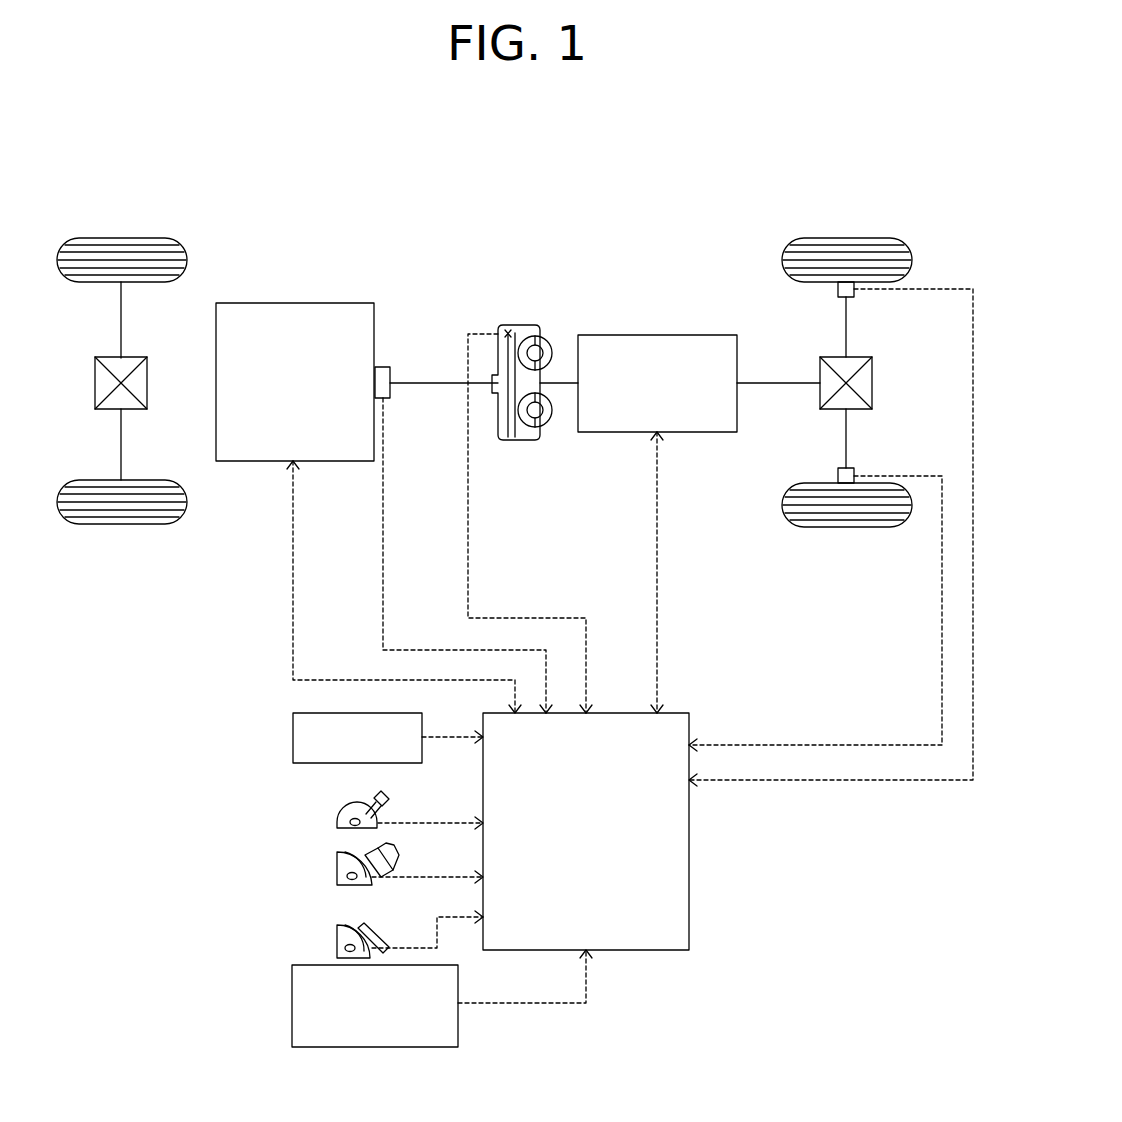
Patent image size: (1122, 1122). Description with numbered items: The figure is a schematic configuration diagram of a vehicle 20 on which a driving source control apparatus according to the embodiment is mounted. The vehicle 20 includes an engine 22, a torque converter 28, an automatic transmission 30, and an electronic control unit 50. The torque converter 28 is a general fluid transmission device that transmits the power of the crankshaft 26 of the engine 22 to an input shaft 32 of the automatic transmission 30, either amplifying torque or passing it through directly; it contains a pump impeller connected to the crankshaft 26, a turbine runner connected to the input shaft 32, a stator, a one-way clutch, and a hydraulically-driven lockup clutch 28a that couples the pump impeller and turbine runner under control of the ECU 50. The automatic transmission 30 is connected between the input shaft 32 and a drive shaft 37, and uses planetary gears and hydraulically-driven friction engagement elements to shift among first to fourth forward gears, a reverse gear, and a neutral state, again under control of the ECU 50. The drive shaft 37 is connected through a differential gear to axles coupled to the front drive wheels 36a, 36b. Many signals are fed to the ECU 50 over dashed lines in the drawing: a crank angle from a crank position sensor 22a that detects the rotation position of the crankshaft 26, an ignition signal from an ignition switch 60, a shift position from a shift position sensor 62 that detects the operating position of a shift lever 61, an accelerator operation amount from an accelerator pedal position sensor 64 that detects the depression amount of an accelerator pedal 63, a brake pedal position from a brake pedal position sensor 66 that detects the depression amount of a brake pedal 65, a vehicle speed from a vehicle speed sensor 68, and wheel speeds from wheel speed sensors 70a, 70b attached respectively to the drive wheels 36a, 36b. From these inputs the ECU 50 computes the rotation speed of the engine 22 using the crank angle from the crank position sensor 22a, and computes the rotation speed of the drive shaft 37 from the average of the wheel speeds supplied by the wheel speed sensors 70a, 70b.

The vehicle 20 is at (768, 158).
The engine 22 is at (293, 303).
The crank position sensor 22a is at (382, 367).
The crankshaft 26 is at (428, 383).
The torque converter 28 is at (530, 440).
The lockup clutch 28a is at (515, 333).
The automatic transmission 30 is at (658, 335).
The input shaft 32 is at (565, 383).
The drive wheel 36a is at (848, 238).
The drive wheel 36b is at (848, 527).
The drive shaft 37 is at (753, 383).
The electronic control unit (ECU) 50 is at (689, 832).
The ignition switch 60 is at (293, 740).
The shift lever 61 is at (372, 802).
The shift position sensor 62 is at (350, 822).
The accelerator pedal 63 is at (378, 856).
The accelerator pedal position sensor 64 is at (347, 875).
The brake pedal 65 is at (370, 928).
The brake pedal position sensor 66 is at (345, 946).
The vehicle speed sensor 68 is at (292, 1000).
The wheel speed sensor 70a is at (836, 290).
The wheel speed sensor 70b is at (836, 476).